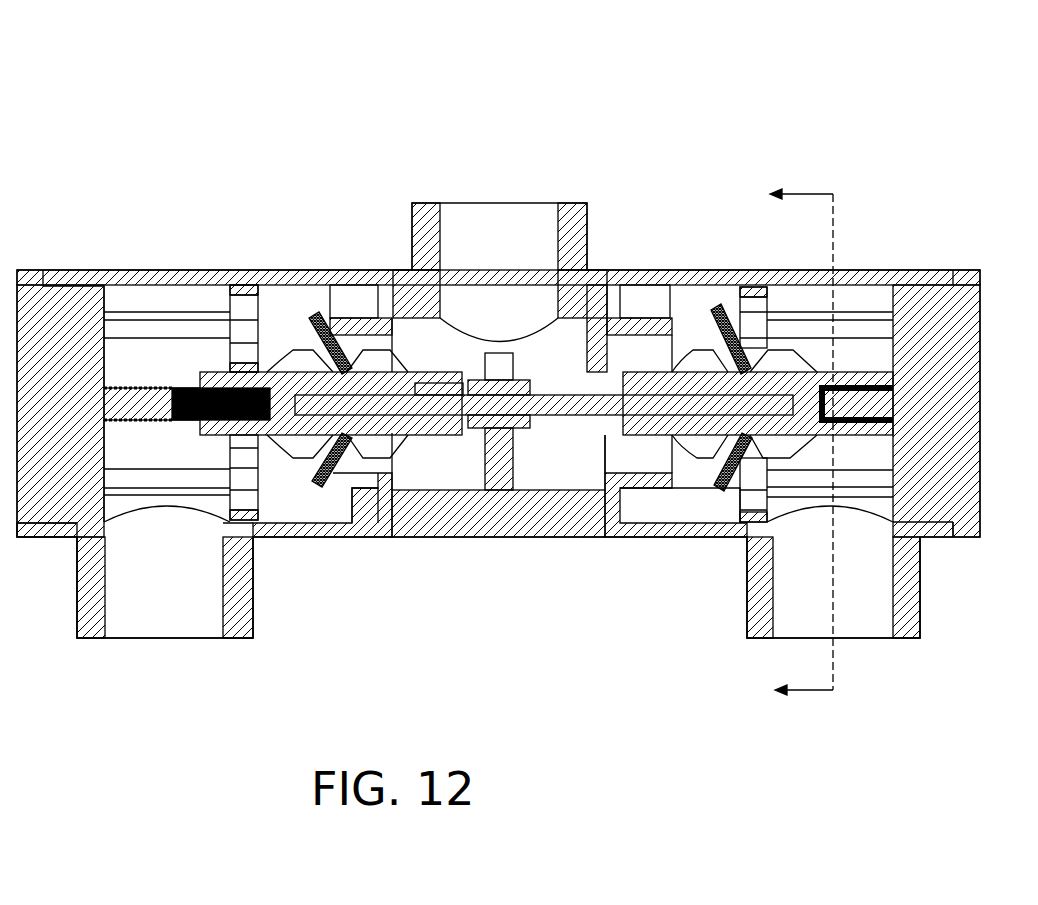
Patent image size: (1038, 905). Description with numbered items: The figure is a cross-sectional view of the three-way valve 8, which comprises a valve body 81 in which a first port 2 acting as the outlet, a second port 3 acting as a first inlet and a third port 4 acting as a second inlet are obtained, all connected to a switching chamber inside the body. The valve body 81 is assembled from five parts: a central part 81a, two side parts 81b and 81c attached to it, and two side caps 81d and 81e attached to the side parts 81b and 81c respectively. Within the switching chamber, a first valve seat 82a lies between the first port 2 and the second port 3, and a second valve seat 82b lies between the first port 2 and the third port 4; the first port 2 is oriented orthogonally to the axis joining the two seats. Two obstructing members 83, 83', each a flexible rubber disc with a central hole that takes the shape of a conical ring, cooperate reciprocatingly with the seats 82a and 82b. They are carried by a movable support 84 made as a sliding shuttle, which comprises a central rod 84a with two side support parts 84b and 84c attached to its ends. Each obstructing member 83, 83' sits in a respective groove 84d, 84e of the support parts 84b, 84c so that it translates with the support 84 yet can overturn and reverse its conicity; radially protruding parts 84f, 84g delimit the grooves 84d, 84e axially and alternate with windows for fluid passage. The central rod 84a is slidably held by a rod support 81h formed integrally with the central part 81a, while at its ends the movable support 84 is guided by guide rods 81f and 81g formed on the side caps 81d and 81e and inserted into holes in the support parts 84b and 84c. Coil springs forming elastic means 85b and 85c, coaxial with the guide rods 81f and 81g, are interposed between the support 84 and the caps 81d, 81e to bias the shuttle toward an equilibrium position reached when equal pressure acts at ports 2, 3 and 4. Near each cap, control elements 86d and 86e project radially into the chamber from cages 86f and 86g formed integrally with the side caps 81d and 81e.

The first port 2 is at (541, 203).
The second port 3 is at (765, 640).
The third port 4 is at (123, 638).
The three-way valve 8 is at (790, 146).
The valve body 81 is at (490, 540).
The central part 81a is at (555, 500).
The side part 81b is at (662, 500).
The side part 81c is at (320, 495).
The side cap 81d is at (955, 295).
The side cap 81e is at (35, 290).
The guide rod 81f is at (953, 532).
The guide rod 81g is at (140, 395).
The rod support 81h is at (500, 450).
The first valve seat 82a is at (680, 327).
The second valve seat 82b is at (335, 312).
The first obstructing member 83 is at (727, 329).
The second obstructing member 83' is at (331, 320).
The movable support 84 is at (580, 395).
The central rod 84a is at (445, 435).
The side support part 84b is at (812, 352).
The side support part 84c is at (272, 365).
The groove 84d is at (737, 485).
The groove 84e is at (335, 475).
The radially protruding part 84f is at (752, 332).
The radially protruding part 84g is at (302, 348).
The elastic means 85b is at (862, 400).
The elastic means 85c is at (182, 428).
The control element 86d is at (768, 312).
The control element 86e is at (262, 492).
The cage 86f is at (860, 482).
The cage 86g is at (200, 330).